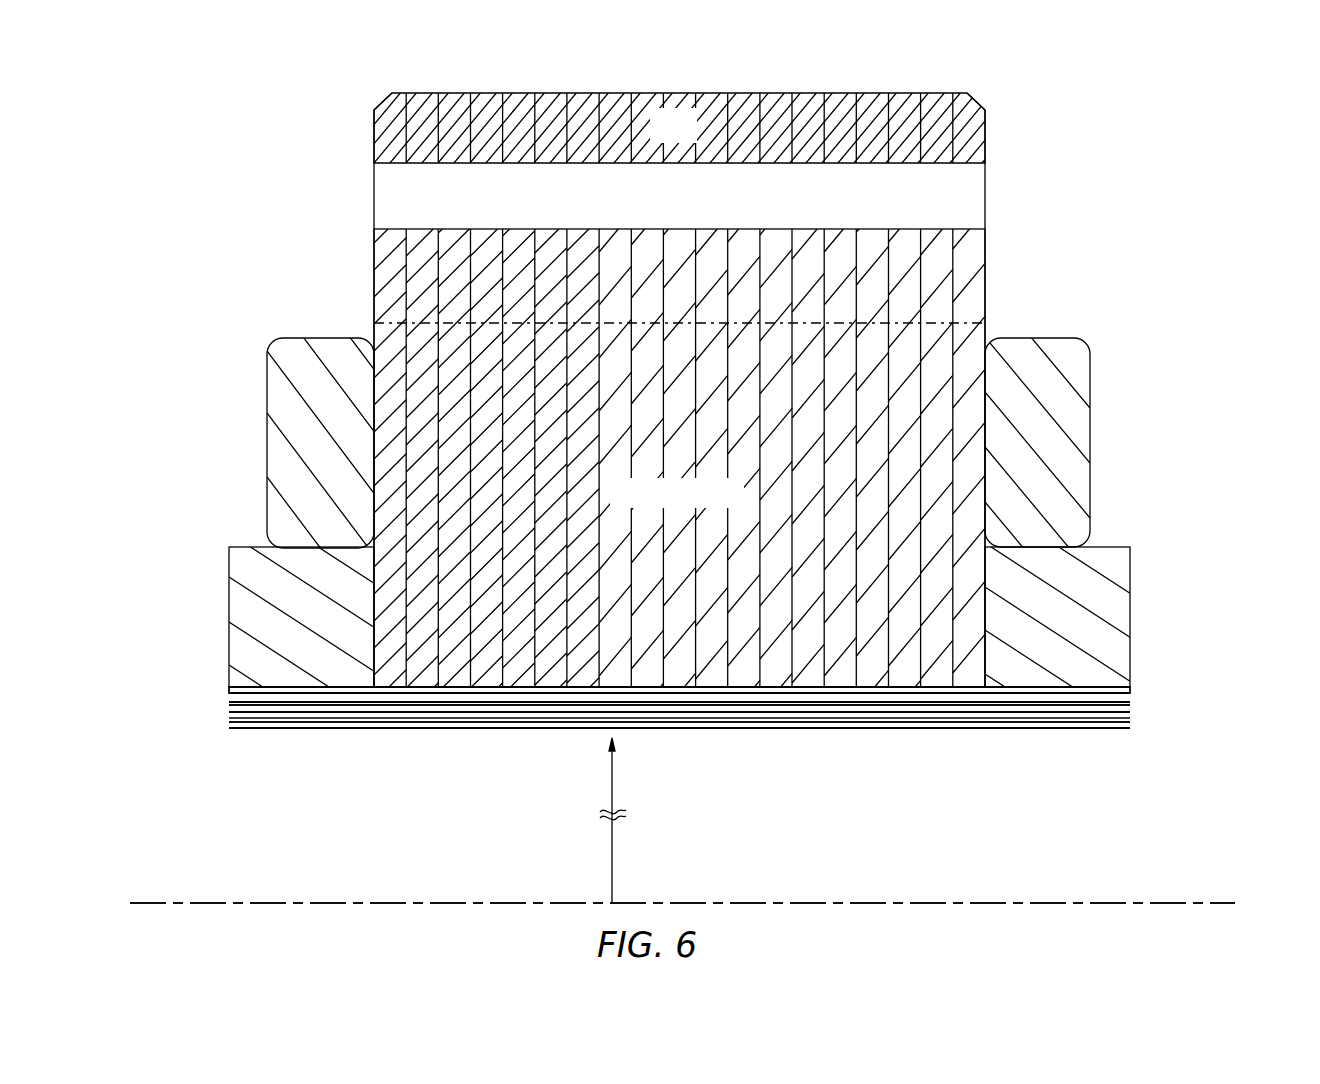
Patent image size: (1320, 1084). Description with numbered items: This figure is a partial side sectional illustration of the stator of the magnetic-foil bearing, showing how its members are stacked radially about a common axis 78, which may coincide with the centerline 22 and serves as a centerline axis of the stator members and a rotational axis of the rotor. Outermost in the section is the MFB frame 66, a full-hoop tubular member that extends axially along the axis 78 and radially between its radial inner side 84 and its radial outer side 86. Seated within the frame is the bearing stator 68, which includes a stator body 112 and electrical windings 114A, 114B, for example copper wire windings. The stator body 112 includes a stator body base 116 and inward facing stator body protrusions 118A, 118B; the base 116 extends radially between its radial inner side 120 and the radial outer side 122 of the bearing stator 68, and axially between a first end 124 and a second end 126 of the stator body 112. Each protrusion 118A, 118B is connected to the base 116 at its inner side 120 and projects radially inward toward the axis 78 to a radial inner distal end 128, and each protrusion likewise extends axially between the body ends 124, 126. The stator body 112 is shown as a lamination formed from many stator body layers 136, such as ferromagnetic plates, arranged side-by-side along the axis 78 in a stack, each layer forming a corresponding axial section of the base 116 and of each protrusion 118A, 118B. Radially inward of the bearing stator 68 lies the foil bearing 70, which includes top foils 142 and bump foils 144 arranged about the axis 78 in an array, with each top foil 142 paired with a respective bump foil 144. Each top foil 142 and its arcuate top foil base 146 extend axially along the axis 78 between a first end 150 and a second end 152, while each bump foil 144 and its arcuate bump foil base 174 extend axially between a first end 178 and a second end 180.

The centerline 22 is at (1133, 900).
The axis 78 is at (682, 820).
The MFB frame 66 is at (1140, 608).
The bearing stator 68 is at (1064, 266).
The foil bearing 70 is at (682, 717).
The radial inner side 84 is at (296, 688).
The radial outer side 86 is at (232, 546).
The stator body 112 is at (680, 365).
The electrical winding 114A is at (1105, 374).
The electrical winding 114B is at (1037, 455).
The stator body base 116 is at (697, 138).
The stator body protrusion 118A is at (679, 458).
The stator body protrusion 118B is at (740, 503).
The radial inner side 120 is at (483, 323).
The radial outer side 122 is at (683, 103).
The first end 124 is at (374, 129).
The second end 126 is at (988, 129).
The radial inner distal end 128 is at (491, 688).
The stator body layer 136 is at (421, 93).
The top foil 142 is at (990, 725).
The bump foil 144 is at (880, 702).
The top foil base 146 is at (815, 713).
The first end 150 is at (229, 722).
The second end 152 is at (1130, 725).
The bump foil base 174 is at (726, 702).
The first end 178 is at (229, 697).
The second end 180 is at (1130, 693).